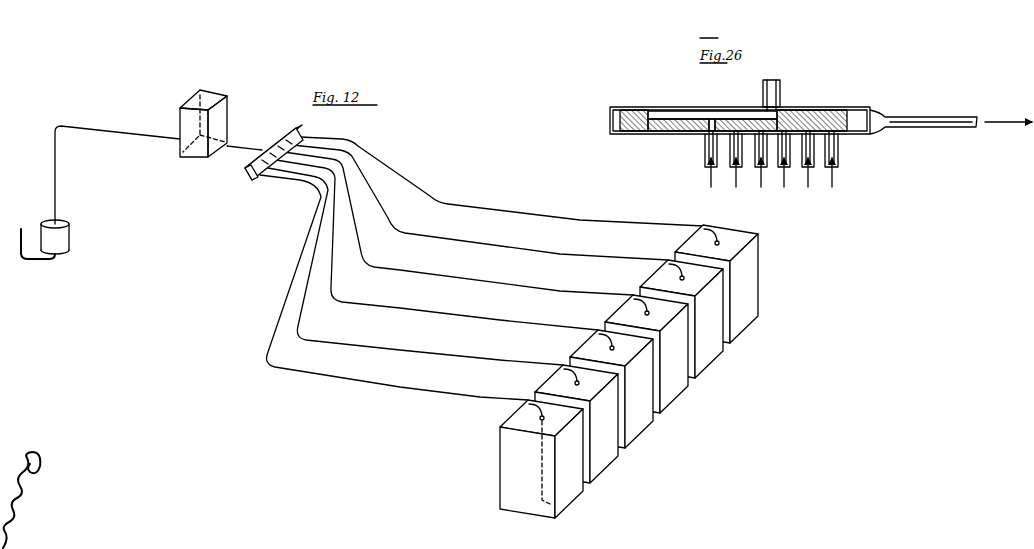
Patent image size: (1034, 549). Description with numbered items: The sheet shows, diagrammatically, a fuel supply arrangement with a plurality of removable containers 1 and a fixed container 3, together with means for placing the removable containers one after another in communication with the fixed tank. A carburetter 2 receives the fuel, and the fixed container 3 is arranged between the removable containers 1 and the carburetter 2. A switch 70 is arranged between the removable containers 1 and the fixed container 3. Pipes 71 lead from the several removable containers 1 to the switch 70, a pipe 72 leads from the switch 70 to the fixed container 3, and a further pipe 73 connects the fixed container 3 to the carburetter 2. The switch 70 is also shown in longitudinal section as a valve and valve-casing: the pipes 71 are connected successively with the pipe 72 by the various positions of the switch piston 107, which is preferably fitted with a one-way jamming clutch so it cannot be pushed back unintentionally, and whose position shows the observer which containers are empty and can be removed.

In FIG. 12, the removable container 1 is at (629, 371).
In FIG. 12, the carburetter 2 is at (45, 239).
In FIG. 12, the fixed container 3 is at (203, 123).
In FIG. 12, the switch 70 is at (291, 132).
In FIG. 26, the switch 70 is at (610, 133).
In FIG. 12, the pipes 71 is at (481, 268).
In FIG. 26, the pipes 71 is at (706, 168).
In FIG. 12, the pipe 72 is at (244, 156).
In FIG. 26, the pipe 72 is at (782, 103).
In FIG. 12, the pipe 73 is at (117, 175).
In FIG. 26, the switch piston 107 is at (863, 122).